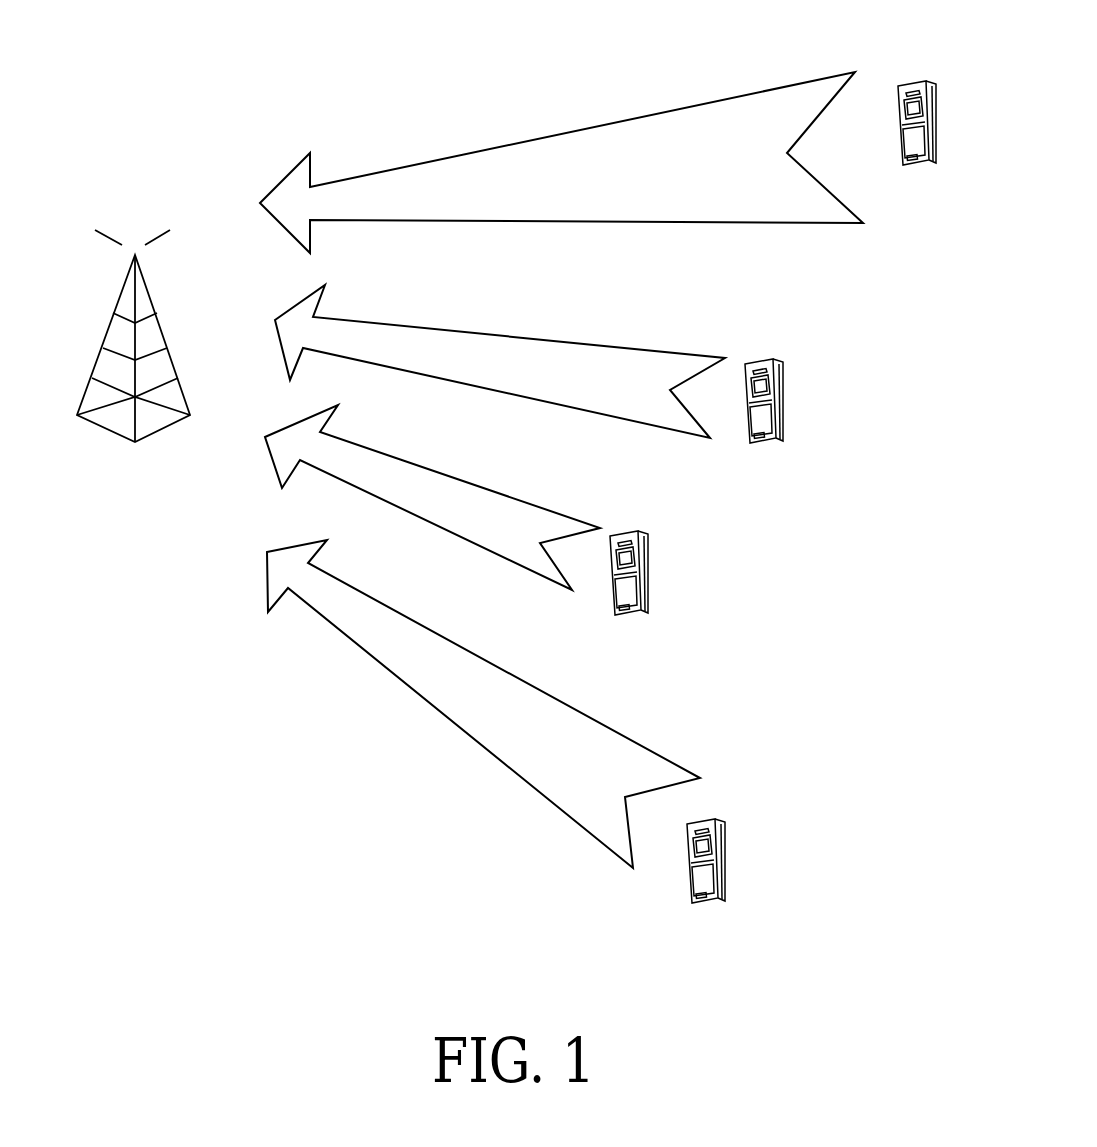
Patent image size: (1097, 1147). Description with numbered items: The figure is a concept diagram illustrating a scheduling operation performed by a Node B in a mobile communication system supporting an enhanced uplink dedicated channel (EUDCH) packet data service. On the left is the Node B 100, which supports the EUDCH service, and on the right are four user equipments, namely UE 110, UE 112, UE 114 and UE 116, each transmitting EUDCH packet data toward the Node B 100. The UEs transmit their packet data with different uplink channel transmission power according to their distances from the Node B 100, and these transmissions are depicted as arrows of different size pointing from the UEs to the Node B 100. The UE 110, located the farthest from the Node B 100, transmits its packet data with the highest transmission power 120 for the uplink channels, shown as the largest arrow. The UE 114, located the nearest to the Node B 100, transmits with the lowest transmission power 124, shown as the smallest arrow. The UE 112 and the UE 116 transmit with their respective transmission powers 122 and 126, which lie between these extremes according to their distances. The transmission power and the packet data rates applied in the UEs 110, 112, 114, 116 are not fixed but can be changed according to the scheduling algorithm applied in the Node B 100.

The Node B 100 is at (135, 238).
The UE 110 is at (922, 83).
The UE 112 is at (767, 360).
The UE 114 is at (630, 532).
The UE 116 is at (703, 827).
The transmission power 120 is at (580, 128).
The transmission power 122 is at (510, 338).
The transmission power 124 is at (457, 485).
The transmission power 126 is at (482, 663).